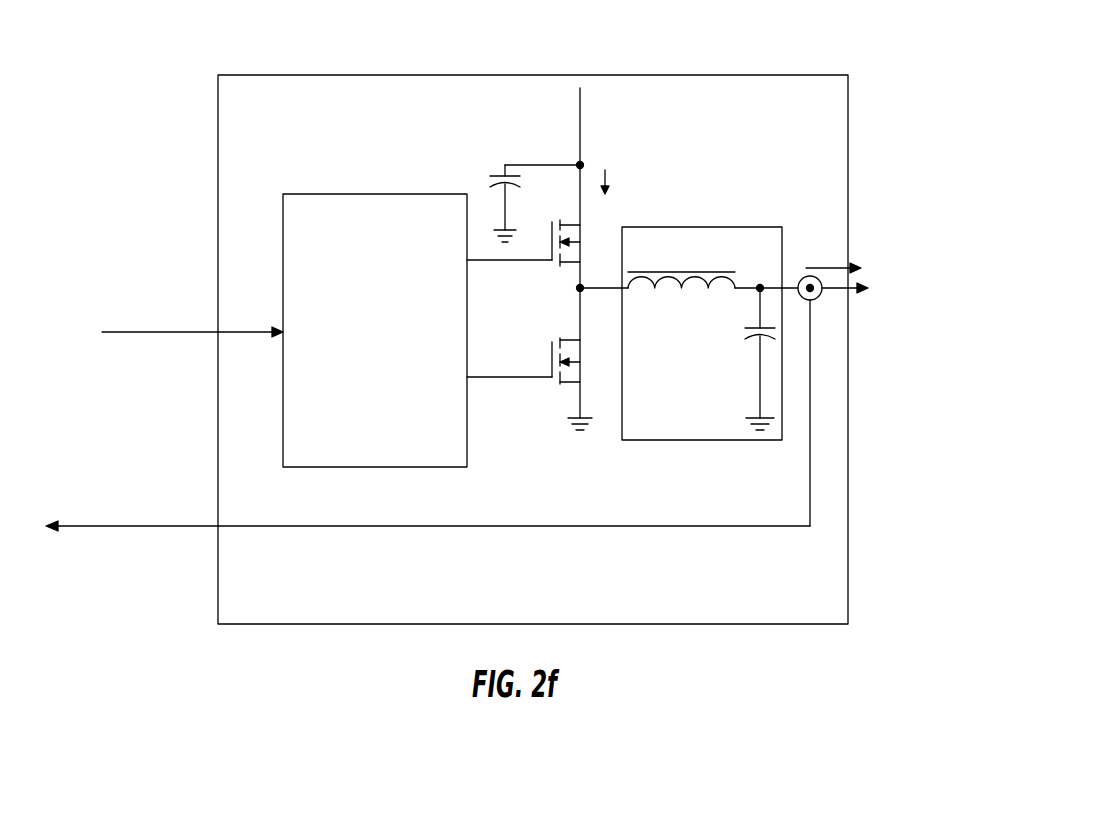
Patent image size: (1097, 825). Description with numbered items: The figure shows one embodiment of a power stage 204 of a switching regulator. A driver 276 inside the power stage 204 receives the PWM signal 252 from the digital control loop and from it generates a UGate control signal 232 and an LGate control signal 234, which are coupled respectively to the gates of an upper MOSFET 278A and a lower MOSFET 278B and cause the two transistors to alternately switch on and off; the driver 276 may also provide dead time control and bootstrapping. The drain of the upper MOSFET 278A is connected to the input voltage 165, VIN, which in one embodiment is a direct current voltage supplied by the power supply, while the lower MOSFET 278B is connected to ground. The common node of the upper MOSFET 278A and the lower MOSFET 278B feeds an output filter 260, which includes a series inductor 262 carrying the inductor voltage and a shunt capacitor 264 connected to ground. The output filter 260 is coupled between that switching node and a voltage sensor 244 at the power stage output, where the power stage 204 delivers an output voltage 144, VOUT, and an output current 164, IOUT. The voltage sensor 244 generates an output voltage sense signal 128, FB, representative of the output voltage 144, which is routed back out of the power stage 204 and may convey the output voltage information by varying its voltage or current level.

The power stage 204 is at (405, 75).
The input voltage 165 is at (581, 105).
The driver 276 is at (357, 306).
The PWM signal 252 is at (165, 330).
The UGate control signal 232 is at (484, 258).
The LGate control signal 234 is at (488, 380).
The upper MOSFET 278A is at (575, 244).
The lower MOSFET 278B is at (566, 338).
The output filter 260 is at (668, 428).
The series inductor 262 is at (688, 290).
The shunt capacitor 264 is at (737, 358).
The voltage sensor 244 is at (802, 276).
The output current 164 is at (803, 250).
The output voltage 144 is at (872, 309).
The output voltage sense signal 128 is at (172, 524).